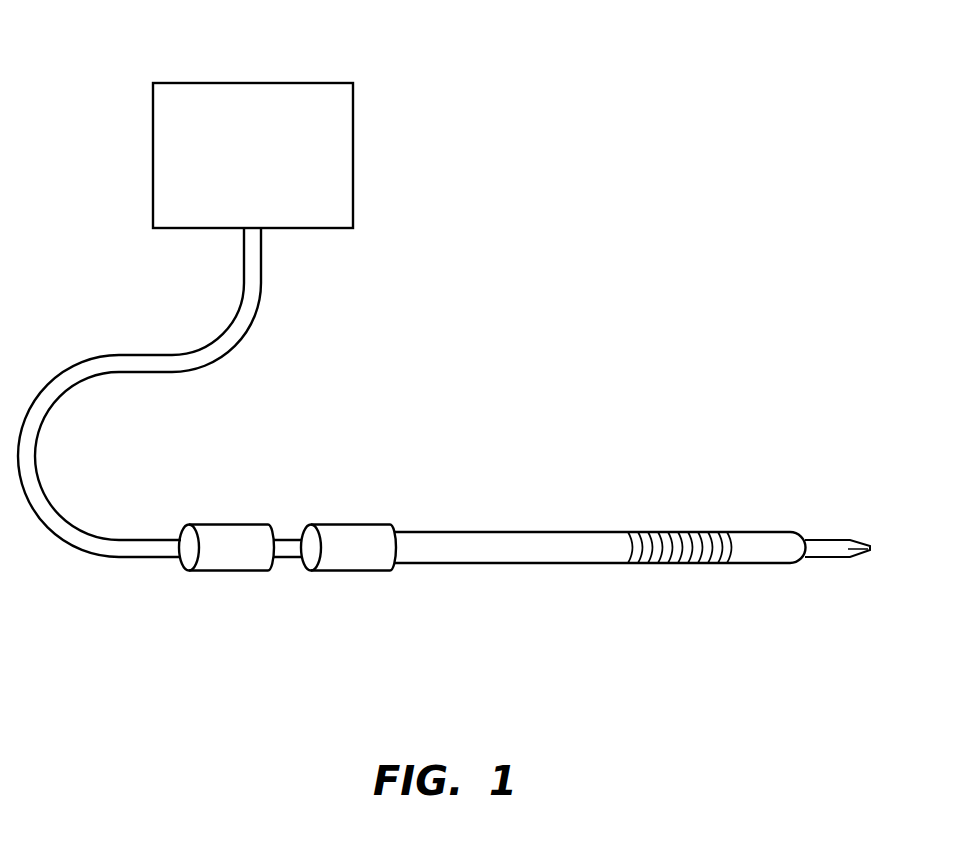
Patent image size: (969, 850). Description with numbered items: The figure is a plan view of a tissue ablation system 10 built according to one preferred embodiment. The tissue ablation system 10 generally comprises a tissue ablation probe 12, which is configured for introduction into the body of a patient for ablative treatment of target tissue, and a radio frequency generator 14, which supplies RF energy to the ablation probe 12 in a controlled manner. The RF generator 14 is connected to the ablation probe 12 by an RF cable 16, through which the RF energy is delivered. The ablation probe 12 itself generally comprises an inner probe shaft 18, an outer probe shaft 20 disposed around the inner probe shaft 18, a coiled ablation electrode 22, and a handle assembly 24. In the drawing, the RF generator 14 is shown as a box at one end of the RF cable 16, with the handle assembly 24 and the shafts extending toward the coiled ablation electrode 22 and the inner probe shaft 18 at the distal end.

The tissue ablation system 10 is at (500, 149).
The tissue ablation probe 12 is at (632, 540).
The radio frequency (RF) generator 14 is at (253, 83).
The RF cable 16 is at (227, 353).
The inner probe shaft 18 is at (830, 540).
The outer probe shaft 20 is at (558, 563).
The coiled ablation electrode 22 is at (670, 563).
The handle assembly 24 is at (348, 550).